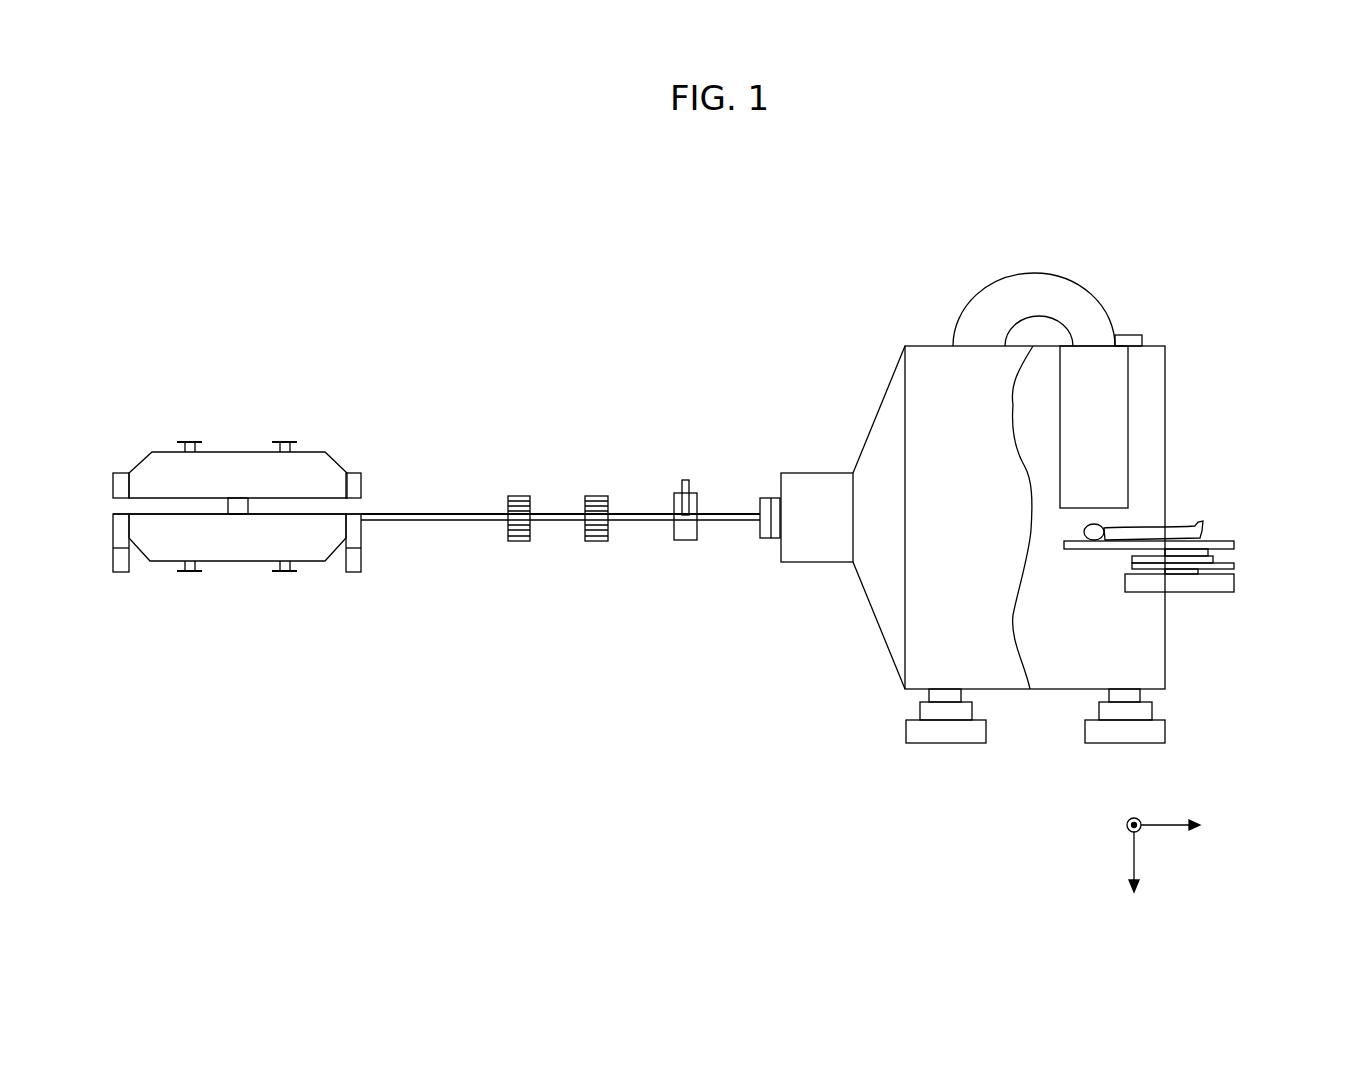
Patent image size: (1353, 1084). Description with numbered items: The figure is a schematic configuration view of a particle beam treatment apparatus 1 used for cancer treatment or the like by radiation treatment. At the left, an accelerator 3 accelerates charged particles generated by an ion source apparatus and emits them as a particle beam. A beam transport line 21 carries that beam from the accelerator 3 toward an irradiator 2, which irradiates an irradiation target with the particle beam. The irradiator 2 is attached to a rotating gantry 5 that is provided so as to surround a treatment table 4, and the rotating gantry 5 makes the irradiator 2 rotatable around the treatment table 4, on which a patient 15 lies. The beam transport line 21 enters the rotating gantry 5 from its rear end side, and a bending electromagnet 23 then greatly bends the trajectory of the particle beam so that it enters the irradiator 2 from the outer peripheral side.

The particle beam treatment apparatus 1 is at (198, 199).
The irradiator 2 is at (1138, 397).
The accelerator 3 is at (163, 452).
The treatment table 4 is at (1235, 542).
The rotating gantry 5 is at (1165, 645).
The patient 15 is at (1125, 525).
The beam transport line 21 is at (1106, 210).
The bending electromagnet 23 is at (1090, 310).